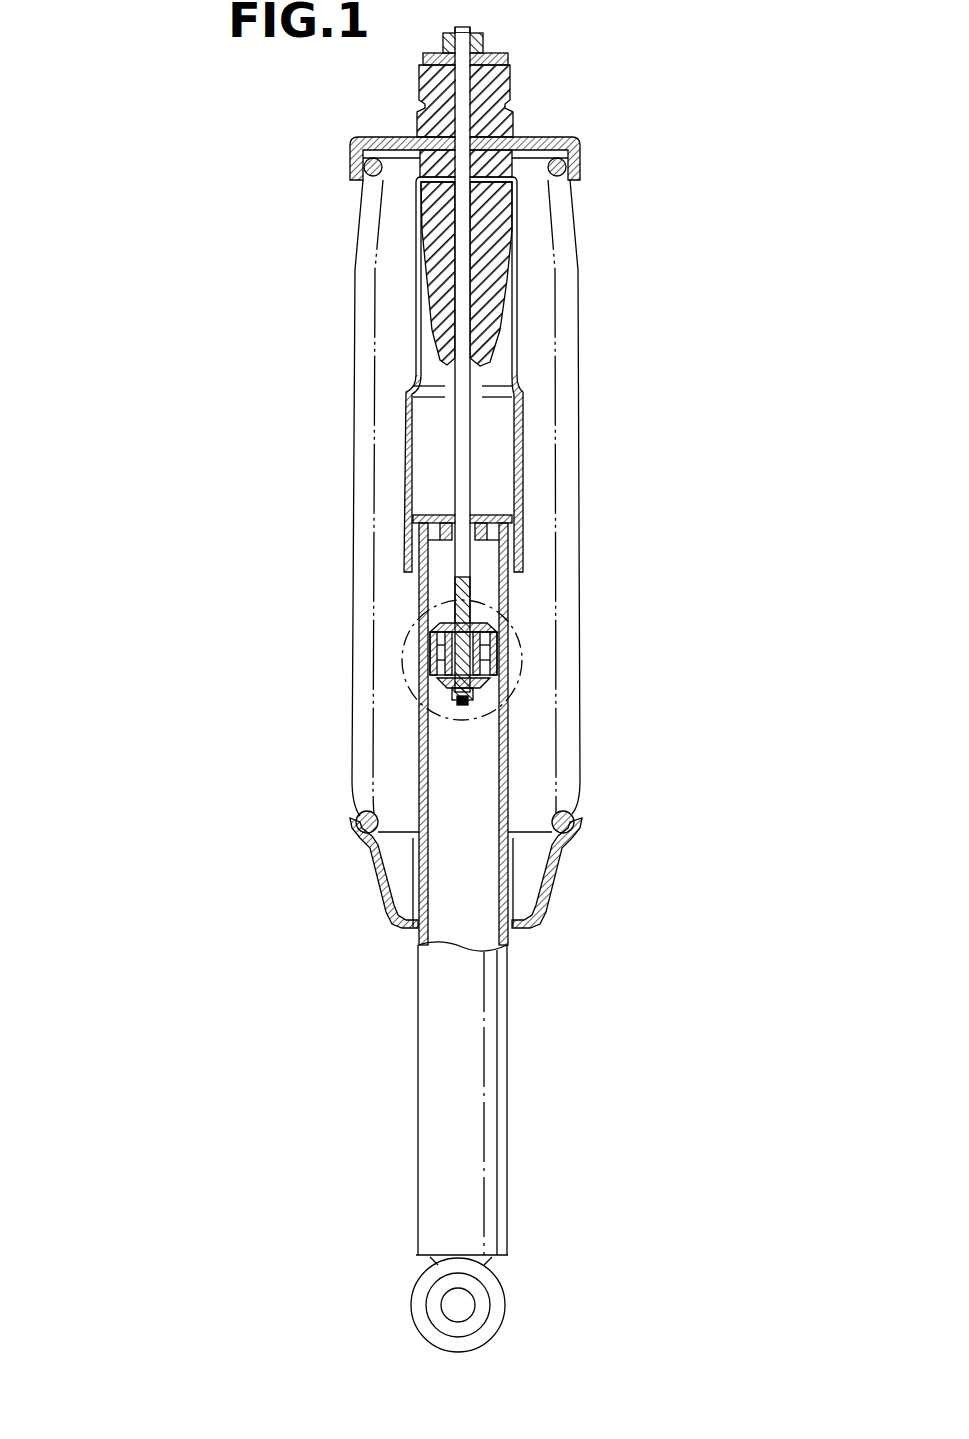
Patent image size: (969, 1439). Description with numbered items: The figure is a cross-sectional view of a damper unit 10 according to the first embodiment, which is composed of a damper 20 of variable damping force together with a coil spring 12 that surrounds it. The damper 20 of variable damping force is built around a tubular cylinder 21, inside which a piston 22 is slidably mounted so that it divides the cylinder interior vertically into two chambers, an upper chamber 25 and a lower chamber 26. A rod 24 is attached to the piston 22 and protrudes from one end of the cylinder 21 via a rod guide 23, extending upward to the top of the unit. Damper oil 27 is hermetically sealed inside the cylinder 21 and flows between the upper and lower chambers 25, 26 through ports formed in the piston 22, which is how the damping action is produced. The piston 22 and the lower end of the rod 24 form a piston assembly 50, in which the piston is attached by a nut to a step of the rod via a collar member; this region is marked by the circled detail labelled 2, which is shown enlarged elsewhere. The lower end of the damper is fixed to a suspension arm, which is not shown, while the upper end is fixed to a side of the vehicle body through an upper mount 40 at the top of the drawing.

The damper unit 10 is at (177, 92).
The damper of variable damping force 20 is at (252, 202).
The upper mount 40 is at (545, 82).
The coil spring 12 is at (578, 253).
The rod 24 is at (477, 438).
The rod guide 23 is at (513, 503).
The upper chamber 25 is at (438, 557).
The piston 22 is at (428, 612).
The damper oil 27 is at (505, 602).
The detail region of FIG. 2 is at (518, 630).
The piston assembly 50 is at (515, 657).
The cylinder 21 is at (508, 743).
The lower chamber 26 is at (445, 745).